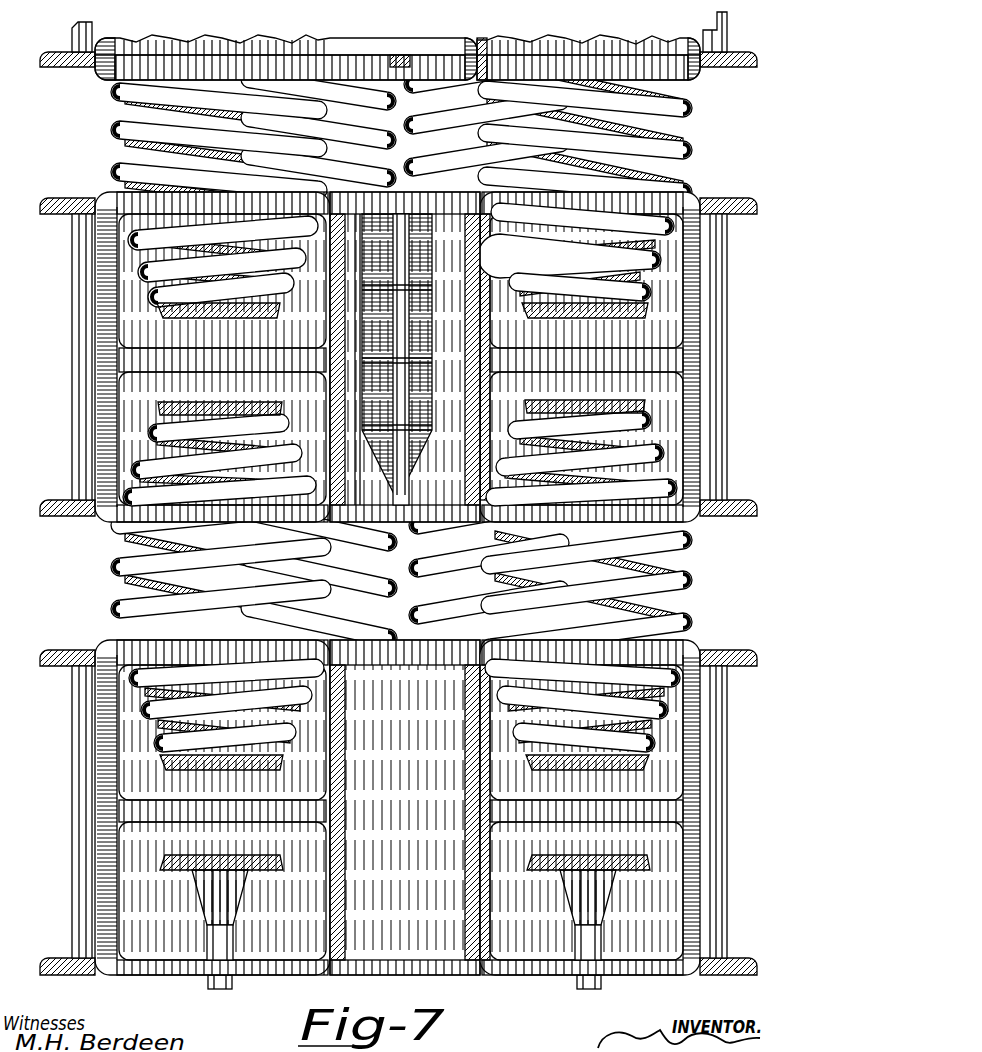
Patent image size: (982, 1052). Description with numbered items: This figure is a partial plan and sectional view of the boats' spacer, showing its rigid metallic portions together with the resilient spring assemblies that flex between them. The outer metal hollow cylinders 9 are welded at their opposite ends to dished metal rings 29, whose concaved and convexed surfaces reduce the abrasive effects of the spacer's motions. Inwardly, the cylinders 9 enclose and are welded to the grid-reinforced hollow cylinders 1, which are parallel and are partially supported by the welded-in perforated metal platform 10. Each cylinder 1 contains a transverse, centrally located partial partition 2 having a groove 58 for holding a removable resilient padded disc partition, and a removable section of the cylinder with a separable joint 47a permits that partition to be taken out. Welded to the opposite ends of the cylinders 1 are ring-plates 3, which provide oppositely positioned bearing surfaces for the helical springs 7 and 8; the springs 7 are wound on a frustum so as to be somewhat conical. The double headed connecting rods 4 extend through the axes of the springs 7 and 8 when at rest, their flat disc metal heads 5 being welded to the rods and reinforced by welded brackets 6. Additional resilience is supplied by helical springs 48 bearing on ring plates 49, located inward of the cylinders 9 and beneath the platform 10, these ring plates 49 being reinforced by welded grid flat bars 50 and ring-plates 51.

The hollow cylinder 1 is at (118, 42).
The partial partition 2 is at (693, 783).
The ring-plate 3 is at (192, 63).
The double headed connecting rod 4 is at (585, 38).
The flat disc metal head 5 is at (640, 845).
The metal bracket 6 is at (600, 885).
The helical spring 7 is at (660, 265).
The helical spring 8 is at (403, 333).
The metal hollow cylinder 9 is at (93, 33).
The perforated metal platform 10 is at (380, 52).
The dished metal ring 29 is at (55, 58).
The separable joint 47a is at (697, 68).
The helical spring 48 is at (444, 72).
The ring plate 49 is at (432, 63).
The grid flat bar 50 is at (420, 303).
The ring-plate 51 is at (423, 357).
The groove 58 is at (92, 797).